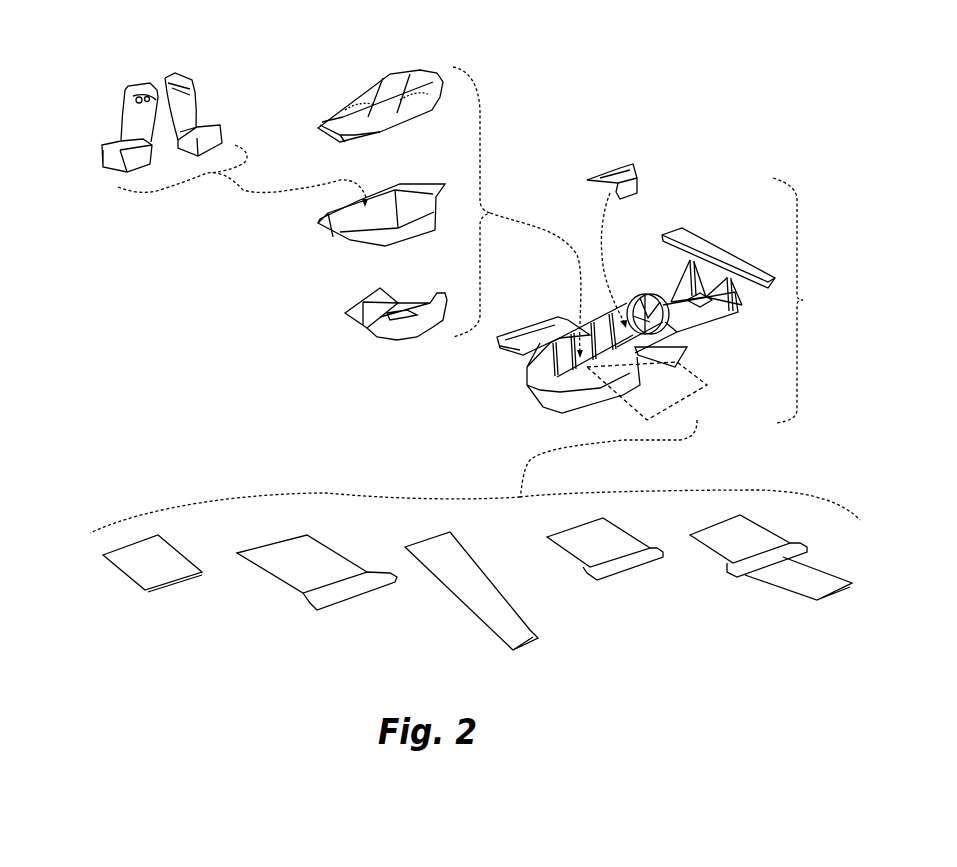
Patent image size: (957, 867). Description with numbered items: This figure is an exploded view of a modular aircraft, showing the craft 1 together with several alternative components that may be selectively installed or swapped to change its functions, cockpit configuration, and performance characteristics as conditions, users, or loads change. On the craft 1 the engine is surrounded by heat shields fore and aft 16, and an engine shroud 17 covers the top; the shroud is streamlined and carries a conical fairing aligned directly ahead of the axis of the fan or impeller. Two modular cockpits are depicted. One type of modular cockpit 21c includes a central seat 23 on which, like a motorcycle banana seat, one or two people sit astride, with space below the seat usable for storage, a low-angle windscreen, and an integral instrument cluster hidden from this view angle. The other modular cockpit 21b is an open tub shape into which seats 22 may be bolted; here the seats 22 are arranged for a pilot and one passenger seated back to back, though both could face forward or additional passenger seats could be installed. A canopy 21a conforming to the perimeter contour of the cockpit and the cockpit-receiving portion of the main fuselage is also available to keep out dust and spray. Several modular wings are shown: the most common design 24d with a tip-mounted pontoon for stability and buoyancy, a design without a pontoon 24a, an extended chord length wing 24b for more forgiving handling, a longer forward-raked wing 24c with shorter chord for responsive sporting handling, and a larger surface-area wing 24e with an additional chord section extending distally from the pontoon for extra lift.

The craft 1 is at (662, 320).
The heat shields 16 is at (672, 368).
The engine shroud 17 is at (605, 177).
The canopy 21a is at (367, 93).
The modular cockpit 21b is at (327, 230).
The modular cockpit 21c is at (353, 320).
The seats 22 is at (170, 73).
The central seat 23 is at (430, 325).
The wing without pontoon 24a is at (133, 573).
The extended chord length wing 24b is at (290, 577).
The forward-raked wing 24c is at (477, 600).
The pontoon-tipped wing 24d is at (617, 570).
The larger surface-area wing 24e is at (783, 583).